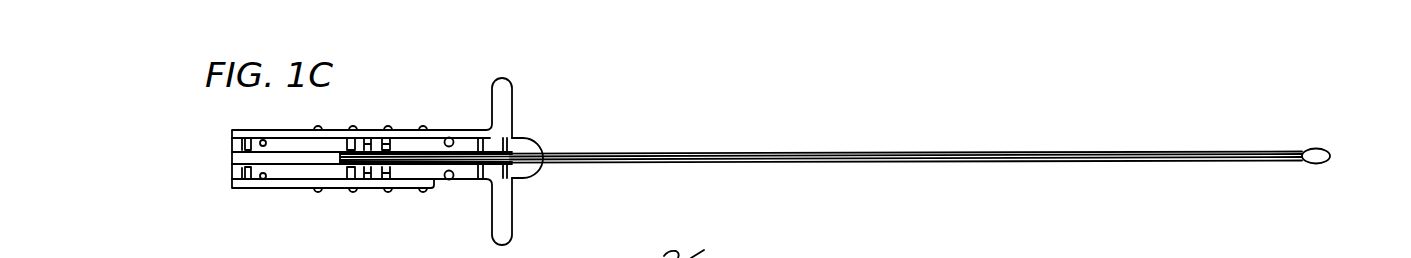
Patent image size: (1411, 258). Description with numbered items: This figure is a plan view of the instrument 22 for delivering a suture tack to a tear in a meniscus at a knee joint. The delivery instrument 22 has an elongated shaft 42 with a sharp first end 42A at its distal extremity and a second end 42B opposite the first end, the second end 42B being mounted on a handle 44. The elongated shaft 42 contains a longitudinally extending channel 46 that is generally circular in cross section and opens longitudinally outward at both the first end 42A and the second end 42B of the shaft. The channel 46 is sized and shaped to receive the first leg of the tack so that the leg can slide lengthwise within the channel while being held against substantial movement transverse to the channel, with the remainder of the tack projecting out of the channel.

The instrument 22 is at (777, 113).
The elongated shaft 42 is at (835, 148).
The first end 42A is at (1318, 149).
The second end 42B is at (339, 160).
The handle 44 is at (447, 128).
The channel 46 is at (1037, 153).